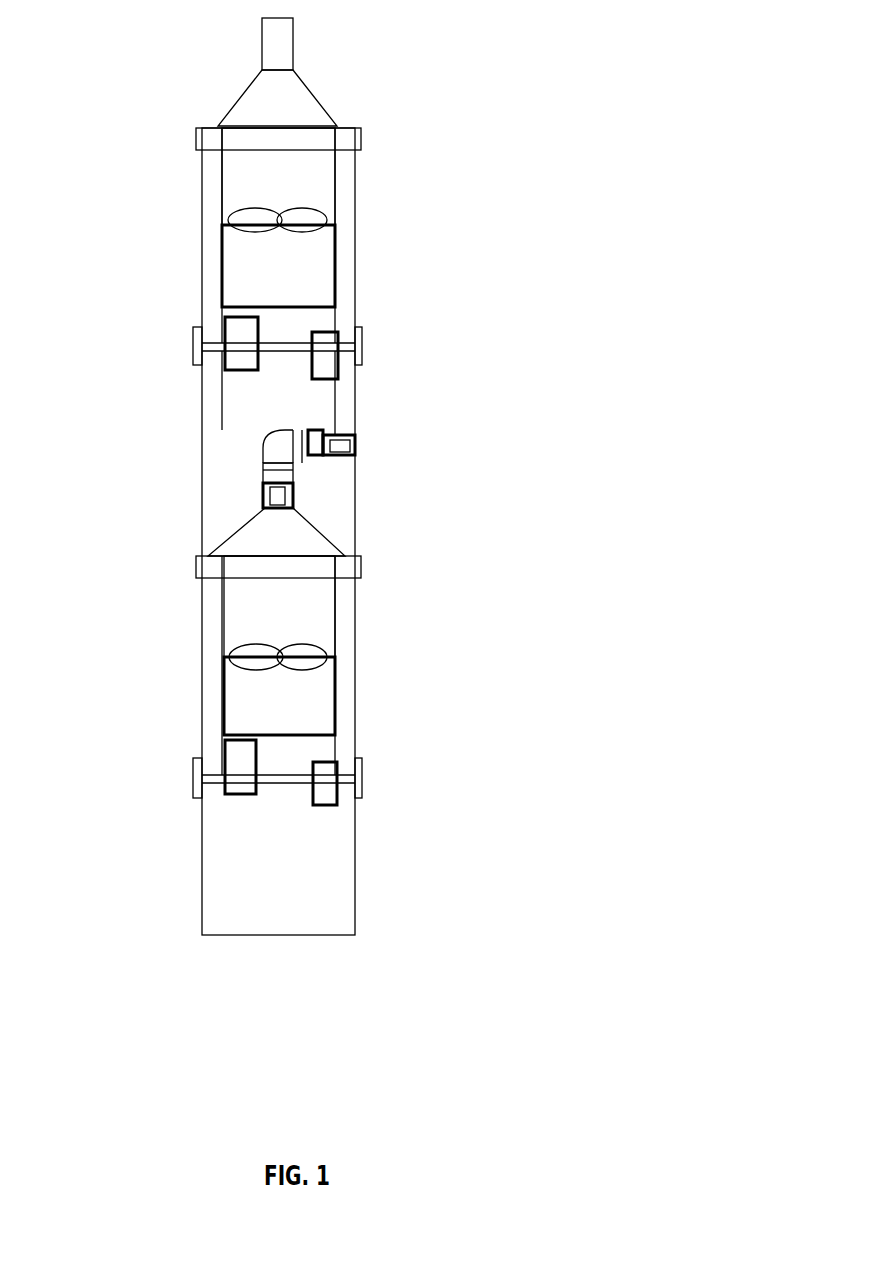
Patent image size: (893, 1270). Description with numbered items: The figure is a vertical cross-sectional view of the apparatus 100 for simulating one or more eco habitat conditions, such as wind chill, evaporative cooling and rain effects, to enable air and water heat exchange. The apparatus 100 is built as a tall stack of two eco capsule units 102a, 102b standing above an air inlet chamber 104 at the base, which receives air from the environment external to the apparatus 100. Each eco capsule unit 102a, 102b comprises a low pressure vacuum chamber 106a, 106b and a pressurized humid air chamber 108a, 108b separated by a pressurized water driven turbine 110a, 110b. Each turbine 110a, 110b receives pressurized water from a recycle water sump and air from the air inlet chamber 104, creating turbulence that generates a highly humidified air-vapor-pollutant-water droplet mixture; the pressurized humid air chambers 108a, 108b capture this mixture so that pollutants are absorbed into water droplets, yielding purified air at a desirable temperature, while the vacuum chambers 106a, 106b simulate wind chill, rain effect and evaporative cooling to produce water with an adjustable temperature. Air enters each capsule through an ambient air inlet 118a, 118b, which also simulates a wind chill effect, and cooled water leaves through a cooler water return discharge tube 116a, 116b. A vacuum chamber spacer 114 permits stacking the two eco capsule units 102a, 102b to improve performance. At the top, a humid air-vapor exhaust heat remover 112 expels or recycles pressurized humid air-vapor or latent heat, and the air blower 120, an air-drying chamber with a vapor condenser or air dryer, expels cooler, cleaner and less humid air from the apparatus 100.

The apparatus for simulating one or more eco habitat conditions 100 is at (158, 912).
The eco capsule unit 102a is at (307, 217).
The eco capsule unit 102b is at (332, 646).
The air inlet chamber 104 is at (315, 888).
The low pressure vacuum chamber 106a is at (190, 228).
The low pressure vacuum chamber 106b is at (190, 660).
The pressurized humid air chamber 108a is at (190, 145).
The pressurized humid air chamber 108b is at (190, 582).
The pressurized water driven turbine 110a is at (317, 233).
The pressurized water driven turbine 110b is at (334, 680).
The humid air-vapor exhaust heat remover 112 is at (270, 40).
The vacuum chamber spacer 114 is at (255, 488).
The cooler water return discharge tube 116a is at (316, 353).
The cooler water return discharge tube 116b is at (313, 790).
The ambient air inlet 118a is at (220, 368).
The ambient air inlet 118b is at (222, 786).
The air blower 120 is at (357, 438).